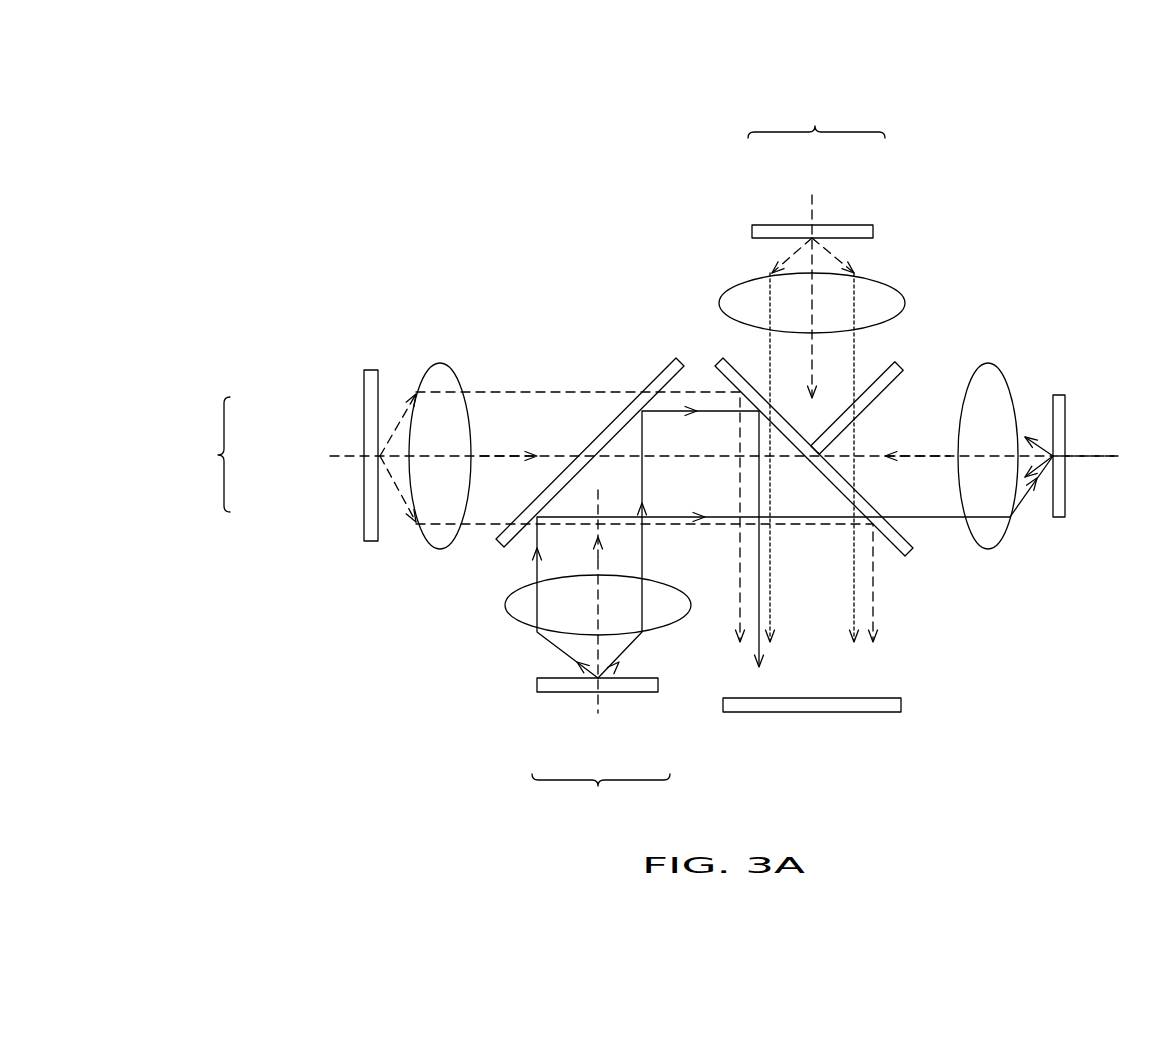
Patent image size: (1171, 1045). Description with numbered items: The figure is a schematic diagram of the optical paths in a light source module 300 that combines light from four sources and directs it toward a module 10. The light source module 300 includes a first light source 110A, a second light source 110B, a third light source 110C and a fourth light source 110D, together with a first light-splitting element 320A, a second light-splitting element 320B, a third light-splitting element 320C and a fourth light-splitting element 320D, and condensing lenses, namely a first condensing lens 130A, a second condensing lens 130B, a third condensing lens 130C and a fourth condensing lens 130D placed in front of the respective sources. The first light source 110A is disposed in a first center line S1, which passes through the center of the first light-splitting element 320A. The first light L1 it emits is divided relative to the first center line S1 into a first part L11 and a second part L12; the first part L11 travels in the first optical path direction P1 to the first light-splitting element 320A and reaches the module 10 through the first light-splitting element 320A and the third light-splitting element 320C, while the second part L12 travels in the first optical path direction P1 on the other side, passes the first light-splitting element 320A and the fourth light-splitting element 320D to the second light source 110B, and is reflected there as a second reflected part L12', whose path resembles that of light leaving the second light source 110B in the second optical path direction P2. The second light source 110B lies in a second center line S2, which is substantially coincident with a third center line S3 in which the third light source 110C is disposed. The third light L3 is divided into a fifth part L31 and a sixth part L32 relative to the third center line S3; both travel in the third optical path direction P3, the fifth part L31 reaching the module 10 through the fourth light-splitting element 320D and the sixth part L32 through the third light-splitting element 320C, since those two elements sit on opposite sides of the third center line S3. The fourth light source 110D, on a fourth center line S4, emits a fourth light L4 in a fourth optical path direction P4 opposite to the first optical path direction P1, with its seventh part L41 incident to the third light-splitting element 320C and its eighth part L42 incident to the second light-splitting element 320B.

The light source module 300 is at (452, 150).
The module 10 is at (901, 705).
The first light source 110A is at (542, 692).
The second light source 110B is at (1065, 505).
The third light source 110C is at (370, 542).
The fourth light source 110D is at (865, 224).
The first condensing lens 130A is at (505, 605).
The second condensing lens 130B is at (989, 363).
The third condensing lens 130C is at (456, 370).
The fourth condensing lens 130D is at (905, 303).
The first light-splitting element 320A is at (500, 542).
The second light-splitting element 320B is at (927, 362).
The third light-splitting element 320C is at (720, 362).
The fourth light-splitting element 320D is at (912, 558).
The first light L1 is at (601, 793).
The first part L11 is at (633, 643).
The second part L12 is at (793, 616).
The second reflected part L12' is at (1070, 456).
The third light L3 is at (206, 454).
The fifth part L31 is at (396, 488).
The sixth part L32 is at (396, 426).
The fourth light L4 is at (816, 118).
The seventh part L41 is at (790, 256).
The eighth part L42 is at (836, 256).
The first center line S1 is at (599, 650).
The second center line S2 is at (1105, 455).
The third center line S3 is at (710, 455).
The fourth center line S4 is at (811, 250).
The first optical path direction P1 is at (615, 526).
The second optical path direction P2 is at (917, 444).
The third optical path direction P3 is at (508, 444).
The fourth optical path direction P4 is at (826, 364).